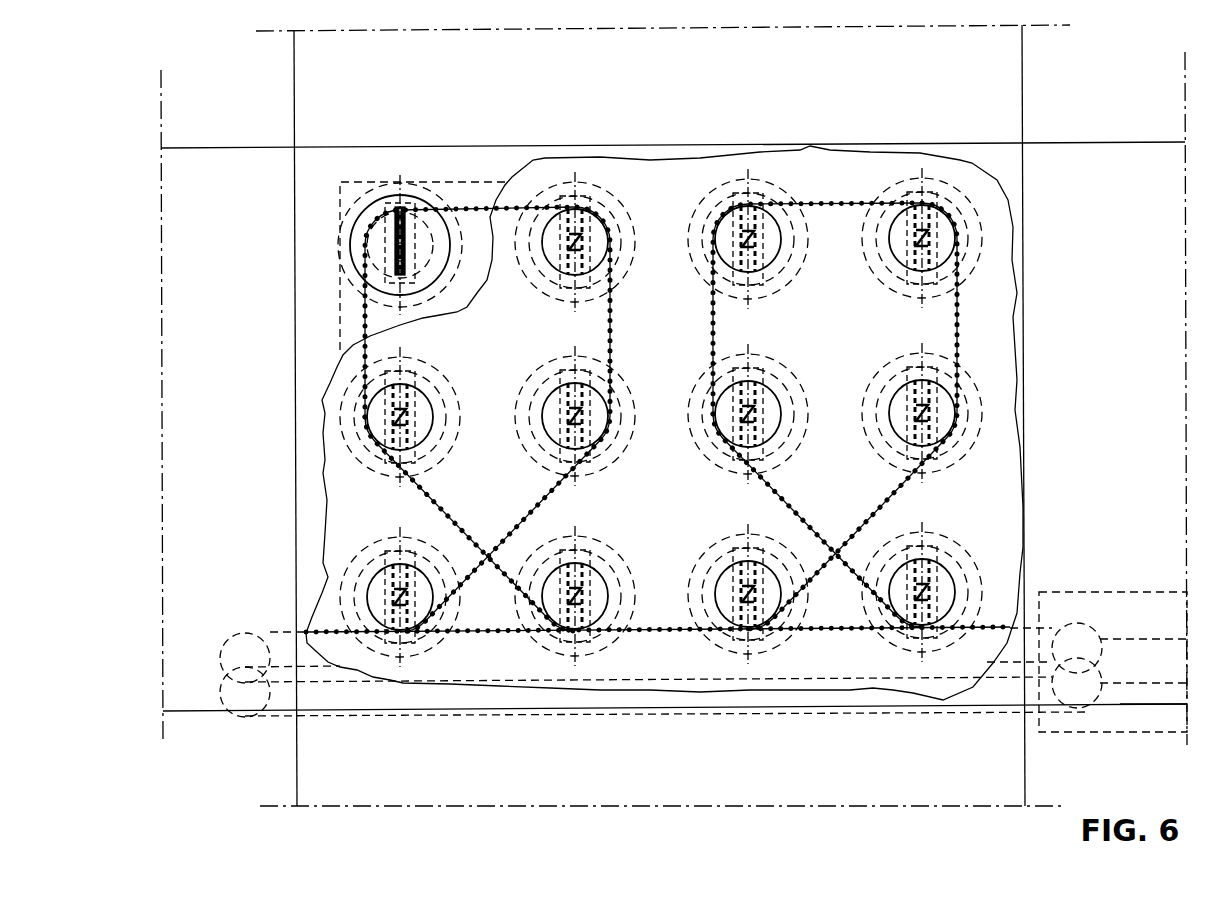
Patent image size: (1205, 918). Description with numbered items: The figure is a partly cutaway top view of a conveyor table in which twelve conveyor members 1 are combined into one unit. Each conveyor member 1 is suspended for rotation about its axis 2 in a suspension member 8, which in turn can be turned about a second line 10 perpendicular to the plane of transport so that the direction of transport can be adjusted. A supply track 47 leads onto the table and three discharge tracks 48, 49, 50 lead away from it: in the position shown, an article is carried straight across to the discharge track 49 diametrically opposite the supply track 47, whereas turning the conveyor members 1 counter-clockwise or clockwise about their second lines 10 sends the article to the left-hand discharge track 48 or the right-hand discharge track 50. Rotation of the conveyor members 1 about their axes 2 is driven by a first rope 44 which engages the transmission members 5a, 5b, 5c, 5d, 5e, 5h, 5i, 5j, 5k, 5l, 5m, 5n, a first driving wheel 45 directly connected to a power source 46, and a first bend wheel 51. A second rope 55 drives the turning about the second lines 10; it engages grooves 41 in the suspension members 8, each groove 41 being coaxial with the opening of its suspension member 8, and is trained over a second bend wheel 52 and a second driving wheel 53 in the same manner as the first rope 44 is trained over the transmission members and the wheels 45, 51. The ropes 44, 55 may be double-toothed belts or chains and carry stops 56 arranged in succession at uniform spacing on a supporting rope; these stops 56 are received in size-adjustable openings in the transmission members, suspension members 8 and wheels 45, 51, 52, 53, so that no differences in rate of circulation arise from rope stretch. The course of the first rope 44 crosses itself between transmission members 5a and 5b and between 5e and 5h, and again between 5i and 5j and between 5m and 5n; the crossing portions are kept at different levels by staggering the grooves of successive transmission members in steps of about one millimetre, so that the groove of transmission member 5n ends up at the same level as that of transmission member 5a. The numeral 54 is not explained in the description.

The conveyor member 1 is at (412, 211).
The axis 2 is at (388, 236).
The transmission member 5a is at (943, 577).
The transmission member 5b is at (770, 400).
The transmission member 5c is at (730, 210).
The transmission member 5d is at (907, 210).
The transmission member 5e is at (942, 400).
The transmission member 5h is at (730, 577).
The transmission member 5i is at (592, 577).
The transmission member 5j is at (427, 402).
The transmission member 5k is at (393, 246).
The transmission member 5l is at (590, 217).
The transmission member 5m is at (562, 398).
The transmission member 5n is at (380, 577).
The suspension member 8 is at (407, 249).
The second line 10 is at (365, 247).
The groove 41 is at (422, 274).
The first rope 44 is at (611, 344).
The first driving wheel 45 is at (500, 713).
The power source 46 is at (1075, 607).
The supply track 47 is at (684, 770).
The discharge track 48 is at (251, 424).
The discharge track 49 is at (686, 93).
The discharge track 50 is at (1121, 424).
The first bend wheel 51 is at (245, 633).
The second bend wheel 52 is at (250, 700).
The second driving wheel 53 is at (1073, 695).
The lead line 54 is at (1145, 715).
The second rope 55 is at (340, 303).
The stop 56 is at (611, 312).